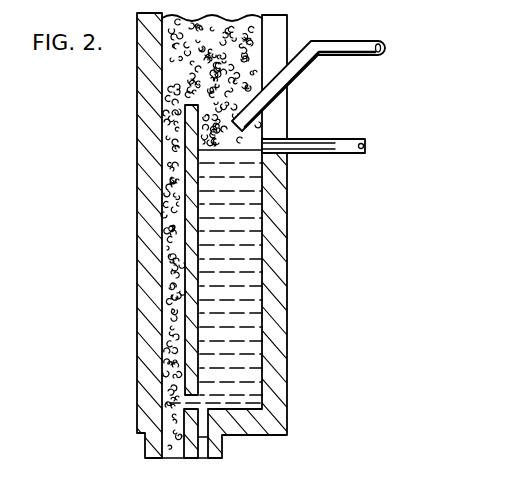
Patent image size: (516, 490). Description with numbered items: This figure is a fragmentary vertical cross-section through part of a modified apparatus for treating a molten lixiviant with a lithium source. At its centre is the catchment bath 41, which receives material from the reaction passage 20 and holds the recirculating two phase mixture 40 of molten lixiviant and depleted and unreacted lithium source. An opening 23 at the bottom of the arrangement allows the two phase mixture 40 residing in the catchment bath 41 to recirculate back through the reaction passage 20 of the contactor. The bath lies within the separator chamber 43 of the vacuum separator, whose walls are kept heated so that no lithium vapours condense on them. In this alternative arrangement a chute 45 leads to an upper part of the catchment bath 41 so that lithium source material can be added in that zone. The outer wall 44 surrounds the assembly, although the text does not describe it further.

The reaction passage 20 is at (168, 288).
The opening 23 is at (194, 402).
The two phase mixture 40 is at (238, 271).
The catchment bath 41 is at (264, 220).
The separator chamber 43 is at (272, 26).
The outer wall 44 is at (137, 180).
The chute 45 is at (298, 72).